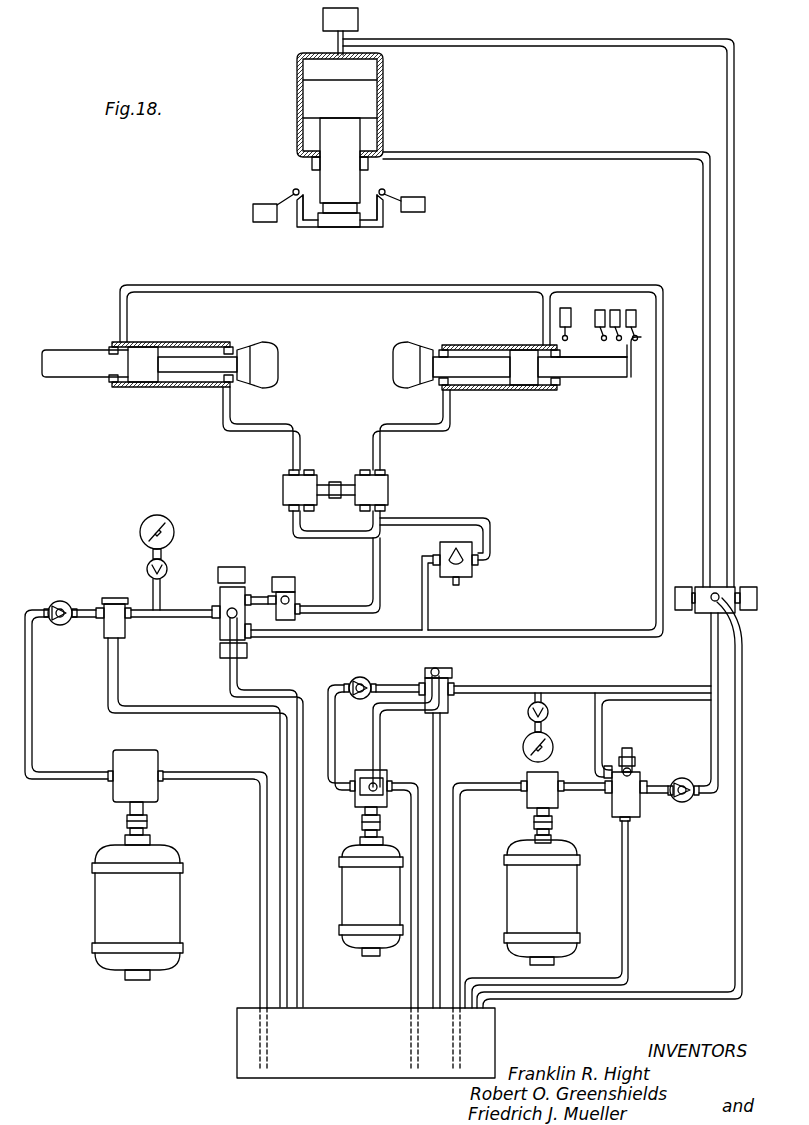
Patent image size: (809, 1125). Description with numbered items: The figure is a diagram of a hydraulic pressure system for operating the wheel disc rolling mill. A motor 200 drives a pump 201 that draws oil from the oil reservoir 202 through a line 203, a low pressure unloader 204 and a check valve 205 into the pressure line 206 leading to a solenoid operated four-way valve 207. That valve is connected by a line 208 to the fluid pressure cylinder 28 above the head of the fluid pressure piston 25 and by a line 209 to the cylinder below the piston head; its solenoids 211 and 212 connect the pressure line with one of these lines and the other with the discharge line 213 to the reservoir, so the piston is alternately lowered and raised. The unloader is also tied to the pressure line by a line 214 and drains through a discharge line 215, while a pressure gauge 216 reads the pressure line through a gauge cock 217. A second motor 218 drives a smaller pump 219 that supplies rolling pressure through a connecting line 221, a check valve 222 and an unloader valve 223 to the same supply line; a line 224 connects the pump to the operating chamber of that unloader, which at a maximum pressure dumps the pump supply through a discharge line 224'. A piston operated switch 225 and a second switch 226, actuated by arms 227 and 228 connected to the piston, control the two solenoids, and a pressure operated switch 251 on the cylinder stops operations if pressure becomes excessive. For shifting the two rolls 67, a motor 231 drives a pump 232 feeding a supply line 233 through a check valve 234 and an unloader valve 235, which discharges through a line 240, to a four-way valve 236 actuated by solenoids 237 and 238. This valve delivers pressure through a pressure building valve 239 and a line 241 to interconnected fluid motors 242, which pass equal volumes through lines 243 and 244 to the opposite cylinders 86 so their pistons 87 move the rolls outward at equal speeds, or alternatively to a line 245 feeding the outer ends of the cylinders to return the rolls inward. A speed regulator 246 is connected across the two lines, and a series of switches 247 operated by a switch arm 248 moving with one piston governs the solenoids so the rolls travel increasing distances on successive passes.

The fluid pressure piston 25 is at (333, 135).
The fluid pressure cylinder 28 is at (386, 110).
The roll 67 is at (265, 341).
The fluid pressure cylinder 86 is at (168, 342).
The piston 87 is at (115, 364).
The motor 200 is at (562, 897).
The pump 201 is at (549, 797).
The oil reservoir 202 is at (328, 1078).
The line 203 is at (574, 783).
The low pressure unloader 204 is at (638, 810).
The check valve 205 is at (676, 778).
The pressure line 206 is at (566, 686).
The four-way valve 207 is at (701, 613).
The line 208 is at (732, 514).
The line 209 is at (703, 500).
The solenoid 211 is at (748, 587).
The solenoid 212 is at (683, 587).
The discharge line 213 is at (735, 868).
The line 214 is at (602, 720).
The discharge line 215 is at (629, 900).
The pressure gauge 216 is at (523, 749).
The gauge cock 217 is at (528, 716).
The second motor 218 is at (344, 870).
The pump 219 is at (380, 776).
The connecting line 221 is at (338, 740).
The check valve 222 is at (352, 682).
The unloader valve 223 is at (450, 677).
The line 224 is at (406, 731).
The discharge line 224' is at (461, 860).
The piston operated switch 225 is at (426, 201).
The second switch 226 is at (262, 224).
The arm 227 is at (384, 216).
The arm 228 is at (300, 214).
The motor 231 is at (95, 926).
The pump 232 is at (158, 762).
The supply line 233 is at (32, 731).
The check valve 234 is at (62, 601).
The unloader valve 235 is at (125, 628).
The four-way valve 236 is at (218, 598).
The solenoid 237 is at (242, 567).
The solenoid 238 is at (218, 652).
The pressure building valve 239 is at (293, 598).
The discharge line 240 is at (118, 686).
The line 241 is at (374, 572).
The fluid motor 242 is at (283, 488).
The line 243 is at (413, 431).
The line 244 is at (236, 431).
The line 245 is at (520, 630).
The speed regulator 246 is at (462, 570).
The switches 247 is at (615, 310).
The switch arm 248 is at (636, 372).
The pressure operated switch 251 is at (323, 20).